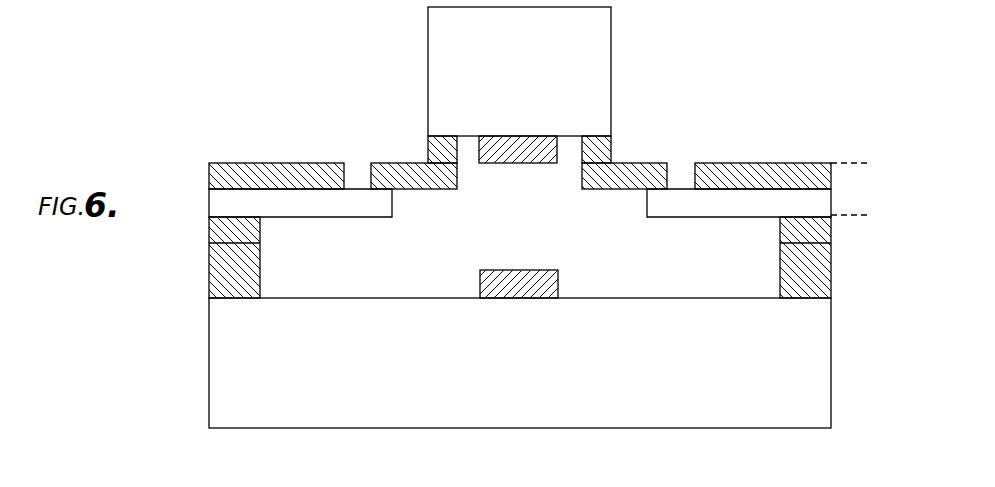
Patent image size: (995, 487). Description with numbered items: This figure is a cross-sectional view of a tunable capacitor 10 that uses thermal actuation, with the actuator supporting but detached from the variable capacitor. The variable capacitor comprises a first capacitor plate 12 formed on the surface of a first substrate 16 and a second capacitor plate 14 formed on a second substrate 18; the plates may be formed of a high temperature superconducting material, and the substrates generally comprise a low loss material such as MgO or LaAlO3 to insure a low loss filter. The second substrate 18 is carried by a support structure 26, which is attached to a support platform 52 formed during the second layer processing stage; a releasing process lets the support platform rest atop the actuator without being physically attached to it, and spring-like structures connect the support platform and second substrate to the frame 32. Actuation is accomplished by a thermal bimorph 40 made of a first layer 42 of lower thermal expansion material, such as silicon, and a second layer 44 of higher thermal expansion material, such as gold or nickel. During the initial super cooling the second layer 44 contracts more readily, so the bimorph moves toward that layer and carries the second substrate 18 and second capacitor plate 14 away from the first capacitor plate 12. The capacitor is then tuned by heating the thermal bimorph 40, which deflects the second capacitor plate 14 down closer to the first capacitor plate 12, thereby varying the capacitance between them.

The tunable capacitor 10 is at (693, 92).
The first capacitor plate 12 is at (527, 284).
The second capacitor plate 14 is at (511, 158).
The first substrate 16 is at (798, 353).
The second substrate 18 is at (595, 93).
The support structure 26 is at (441, 150).
The frame 32 is at (204, 218).
The thermal bimorph 40 is at (866, 163).
The first layer 42 is at (222, 210).
The second layer 44 is at (222, 180).
The support platform 52 is at (388, 178).